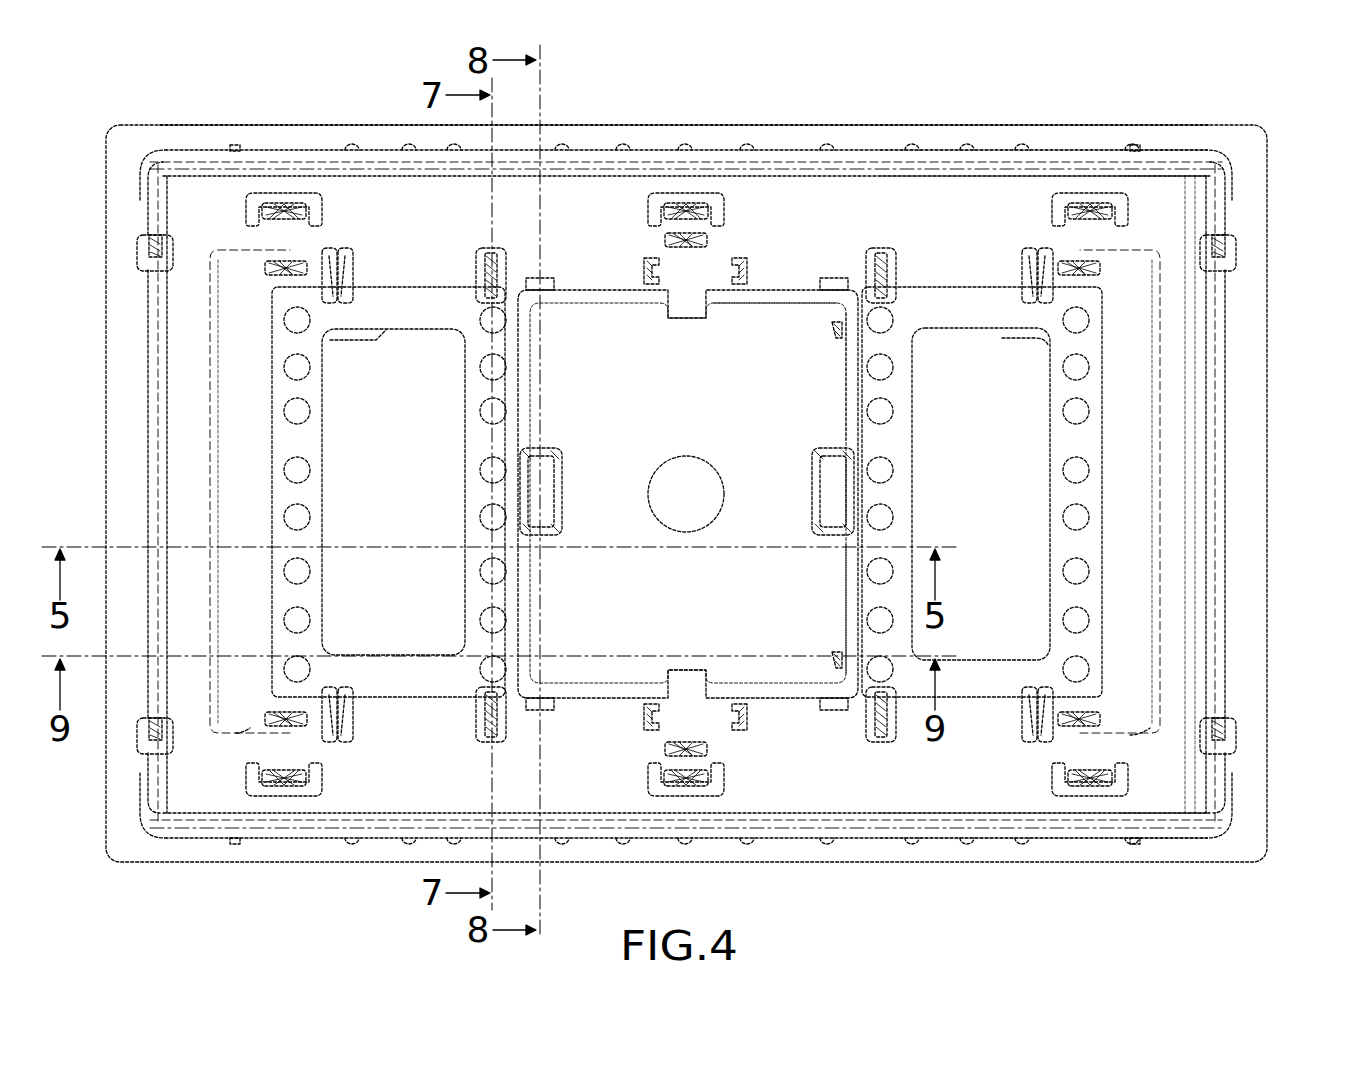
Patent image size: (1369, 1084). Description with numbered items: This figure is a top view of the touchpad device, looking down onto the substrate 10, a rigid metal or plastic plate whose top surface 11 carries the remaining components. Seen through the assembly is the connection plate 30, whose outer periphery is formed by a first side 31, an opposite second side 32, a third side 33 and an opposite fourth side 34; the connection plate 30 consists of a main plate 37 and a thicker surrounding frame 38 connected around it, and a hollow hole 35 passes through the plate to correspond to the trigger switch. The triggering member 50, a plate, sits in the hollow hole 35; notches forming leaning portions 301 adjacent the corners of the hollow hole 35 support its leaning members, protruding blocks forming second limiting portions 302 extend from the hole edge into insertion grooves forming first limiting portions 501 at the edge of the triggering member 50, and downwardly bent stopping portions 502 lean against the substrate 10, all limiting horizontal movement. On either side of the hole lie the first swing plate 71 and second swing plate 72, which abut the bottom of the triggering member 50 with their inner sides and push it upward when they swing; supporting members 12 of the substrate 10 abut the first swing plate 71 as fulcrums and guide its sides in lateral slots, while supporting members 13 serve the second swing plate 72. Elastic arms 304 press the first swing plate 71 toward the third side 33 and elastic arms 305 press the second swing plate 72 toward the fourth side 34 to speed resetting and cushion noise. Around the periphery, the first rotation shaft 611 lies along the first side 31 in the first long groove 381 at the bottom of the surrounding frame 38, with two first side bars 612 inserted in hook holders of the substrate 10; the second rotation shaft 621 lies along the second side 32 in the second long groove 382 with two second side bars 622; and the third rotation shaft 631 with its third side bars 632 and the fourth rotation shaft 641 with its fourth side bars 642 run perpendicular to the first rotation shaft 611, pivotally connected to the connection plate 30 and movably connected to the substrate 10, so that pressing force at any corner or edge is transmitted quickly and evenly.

The substrate 10 is at (178, 124).
The top surface 11 is at (222, 134).
The supporting member 12 is at (480, 270).
The supporting member 13 is at (880, 250).
The connection plate 30 is at (1277, 494).
The first side 31 is at (268, 150).
The second side 32 is at (983, 840).
The third side 33 is at (147, 326).
The fourth side 34 is at (1226, 326).
The hollow hole 35 is at (742, 290).
The main plate 37 is at (1190, 455).
The surrounding frame 38 is at (1215, 493).
The triggering member 50 is at (580, 310).
The first swing plate 71 is at (270, 410).
The second swing plate 72 is at (1100, 410).
The leaning portion 301 is at (846, 300).
The second limiting portion 302 is at (686, 195).
The elastic arm 304 is at (335, 248).
The elastic arm 305 is at (1035, 248).
The first long groove 381 is at (1101, 156).
The second long groove 382 is at (1101, 832).
The first limiting portion 501 is at (660, 310).
The stopping portion 502 is at (835, 322).
The first rotation shaft 611 is at (945, 165).
The first side bar 612 is at (150, 205).
The second rotation shaft 621 is at (940, 822).
The second side bar 622 is at (148, 790).
The third rotation shaft 631 is at (215, 370).
The third side bar 632 is at (235, 265).
The fourth rotation shaft 641 is at (1160, 368).
The fourth side bar 642 is at (1238, 255).